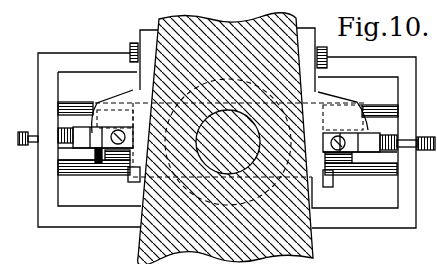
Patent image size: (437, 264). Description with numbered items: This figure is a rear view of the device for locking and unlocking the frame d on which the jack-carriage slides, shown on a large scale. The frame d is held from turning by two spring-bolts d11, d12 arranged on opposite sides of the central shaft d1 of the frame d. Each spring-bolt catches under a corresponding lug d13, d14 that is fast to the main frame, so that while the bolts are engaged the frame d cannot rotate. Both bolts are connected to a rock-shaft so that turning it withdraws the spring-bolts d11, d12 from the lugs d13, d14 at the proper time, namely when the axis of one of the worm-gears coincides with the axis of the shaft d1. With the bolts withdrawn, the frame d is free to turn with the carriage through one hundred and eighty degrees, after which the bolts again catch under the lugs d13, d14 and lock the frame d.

The frame d is at (387, 223).
The shaft of the frame d1 is at (325, 261).
The spring-bolt d11 is at (372, 145).
The spring-bolt d12 is at (82, 138).
The lug d13 is at (345, 108).
The lug d14 is at (110, 100).